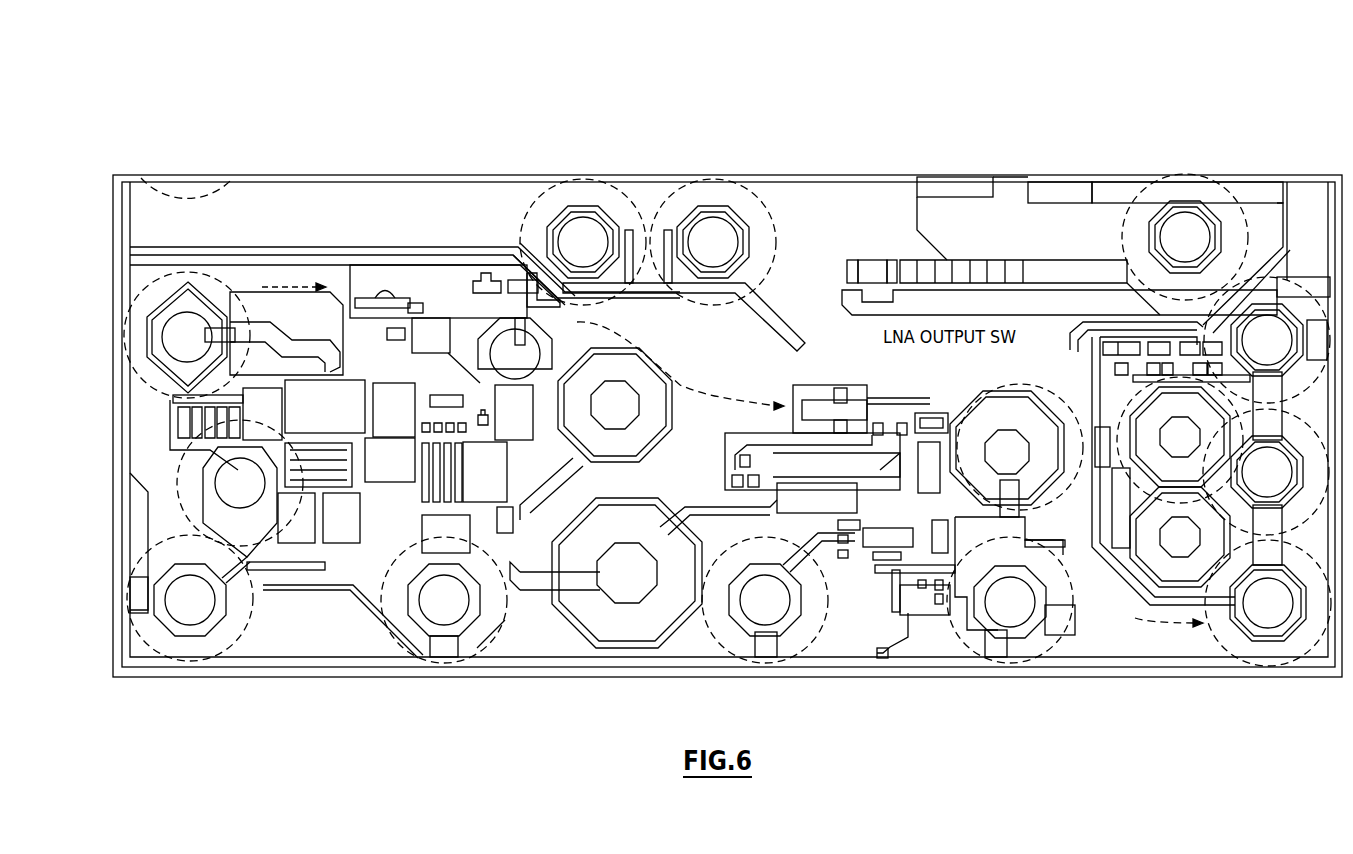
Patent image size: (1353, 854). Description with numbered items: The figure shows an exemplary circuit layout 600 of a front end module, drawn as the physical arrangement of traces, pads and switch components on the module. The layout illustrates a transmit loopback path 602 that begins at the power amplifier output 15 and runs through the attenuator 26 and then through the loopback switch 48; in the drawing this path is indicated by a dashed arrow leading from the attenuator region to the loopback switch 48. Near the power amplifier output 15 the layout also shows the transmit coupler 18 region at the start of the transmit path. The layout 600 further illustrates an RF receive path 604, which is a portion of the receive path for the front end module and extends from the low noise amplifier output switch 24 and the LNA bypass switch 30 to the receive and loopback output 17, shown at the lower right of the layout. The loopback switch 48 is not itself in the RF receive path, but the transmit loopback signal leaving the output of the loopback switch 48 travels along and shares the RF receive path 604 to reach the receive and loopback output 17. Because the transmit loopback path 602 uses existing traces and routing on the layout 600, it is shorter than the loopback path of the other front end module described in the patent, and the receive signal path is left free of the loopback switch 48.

The circuit layout 600 is at (148, 78).
The power amplifier output 15 is at (172, 275).
The transmit coupler 18 is at (222, 300).
The attenuator 26 is at (382, 275).
The transmit loopback path 602 is at (612, 318).
The loopback switch 48 is at (775, 390).
The LNA bypass switch 30 is at (742, 432).
The low noise amplifier output switch 24 is at (928, 412).
The RF receive path 604 is at (1140, 622).
The receive & loopback output 17 is at (1290, 645).